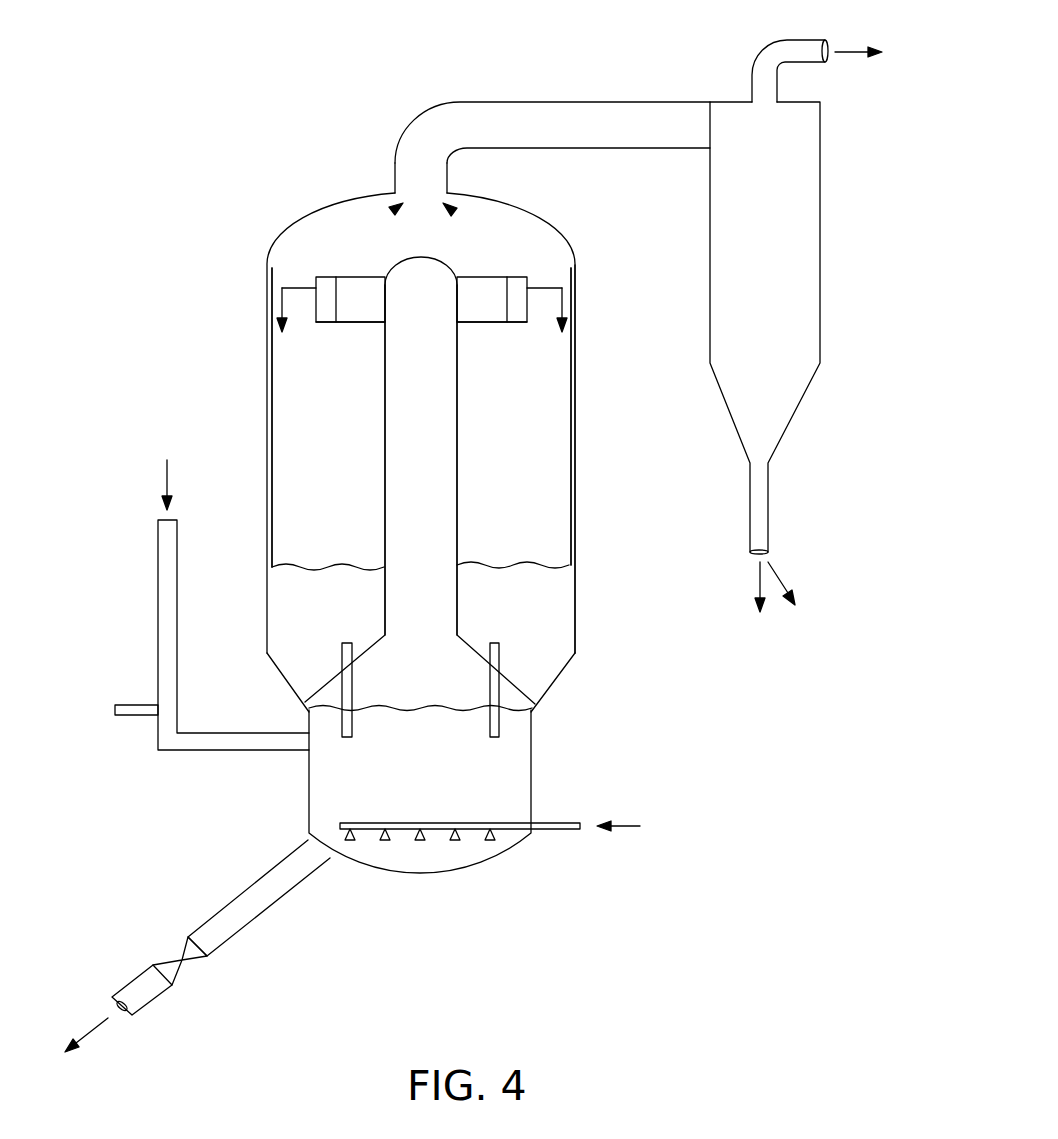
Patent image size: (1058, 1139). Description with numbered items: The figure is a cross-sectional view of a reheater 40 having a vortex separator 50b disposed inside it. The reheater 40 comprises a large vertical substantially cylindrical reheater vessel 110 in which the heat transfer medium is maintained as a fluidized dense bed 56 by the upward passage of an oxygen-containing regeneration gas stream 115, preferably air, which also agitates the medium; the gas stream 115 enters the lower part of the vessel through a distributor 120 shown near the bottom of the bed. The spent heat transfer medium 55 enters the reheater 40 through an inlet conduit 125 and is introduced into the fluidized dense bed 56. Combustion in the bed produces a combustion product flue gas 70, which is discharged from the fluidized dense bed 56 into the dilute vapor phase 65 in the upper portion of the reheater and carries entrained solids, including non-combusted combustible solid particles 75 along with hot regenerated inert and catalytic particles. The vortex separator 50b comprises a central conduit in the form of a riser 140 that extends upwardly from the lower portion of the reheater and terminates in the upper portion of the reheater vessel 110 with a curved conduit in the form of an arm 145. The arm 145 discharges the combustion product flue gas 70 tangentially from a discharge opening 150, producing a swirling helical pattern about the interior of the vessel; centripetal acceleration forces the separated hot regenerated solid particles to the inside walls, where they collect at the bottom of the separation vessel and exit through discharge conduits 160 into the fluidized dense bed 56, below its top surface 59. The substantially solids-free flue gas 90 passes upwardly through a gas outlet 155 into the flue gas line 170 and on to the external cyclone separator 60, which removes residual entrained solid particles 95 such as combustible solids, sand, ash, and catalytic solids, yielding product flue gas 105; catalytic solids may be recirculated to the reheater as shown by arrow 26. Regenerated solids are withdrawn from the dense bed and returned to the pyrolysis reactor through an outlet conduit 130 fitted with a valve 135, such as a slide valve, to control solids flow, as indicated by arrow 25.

The arrow 25 is at (88, 1034).
The arrow 26 is at (759, 580).
The reheater 40 is at (596, 396).
The vortex separator 50b is at (472, 515).
The spent heat transfer medium 55 is at (165, 478).
The fluidized dense bed 56 is at (442, 780).
The top surface of the fluidized dense bed 59 is at (530, 712).
The external cyclone separator 60 is at (821, 233).
The dilute vapor phase 65 is at (382, 402).
The combustion product flue gas 70 is at (287, 315).
The non-combusted combustible solid particles 75 is at (280, 493).
The substantially solids-free flue gas 90 is at (392, 211).
The residual entrained solid particles 95 is at (778, 572).
The product flue gas 105 is at (850, 47).
The reheater vessel 110 is at (578, 508).
The oxygen-containing regeneration gas stream 115 is at (628, 822).
The gas distributor 120 is at (497, 822).
The feed pipe 125 is at (157, 608).
The outlet conduit 130 is at (270, 908).
The valve 135 is at (181, 960).
The riser 140 is at (444, 544).
The arm 145 is at (360, 323).
The discharge opening 150 is at (316, 284).
The gas outlet 155 is at (442, 191).
The discharge conduits 160 is at (353, 670).
The flue gas line 170 is at (553, 98).